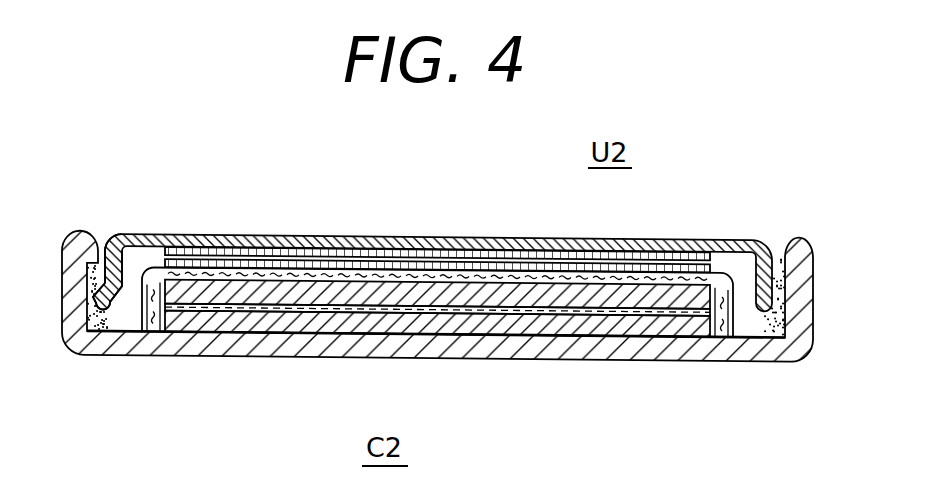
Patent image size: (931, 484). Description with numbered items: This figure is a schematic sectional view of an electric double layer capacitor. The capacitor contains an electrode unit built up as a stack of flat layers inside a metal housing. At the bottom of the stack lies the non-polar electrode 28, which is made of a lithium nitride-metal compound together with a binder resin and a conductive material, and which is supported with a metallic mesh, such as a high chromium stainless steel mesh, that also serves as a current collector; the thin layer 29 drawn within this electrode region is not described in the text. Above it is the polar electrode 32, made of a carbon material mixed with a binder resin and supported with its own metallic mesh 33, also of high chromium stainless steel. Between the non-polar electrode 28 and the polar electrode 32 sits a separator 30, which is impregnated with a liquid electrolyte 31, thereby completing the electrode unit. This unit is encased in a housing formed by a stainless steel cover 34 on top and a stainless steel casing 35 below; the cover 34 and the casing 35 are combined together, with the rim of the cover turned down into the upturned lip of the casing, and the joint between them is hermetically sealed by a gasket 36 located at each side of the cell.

The non-polar electrode 28 is at (303, 322).
The current collector 29 is at (413, 308).
The separator 30 is at (138, 268).
The liquid electrolyte 31 is at (736, 268).
The polar electrode 32 is at (323, 262).
The metallic mesh 33 is at (388, 262).
The stainless steel cover 34 is at (247, 235).
The stainless steel casing 35 is at (595, 350).
The gasket 36 is at (796, 300).